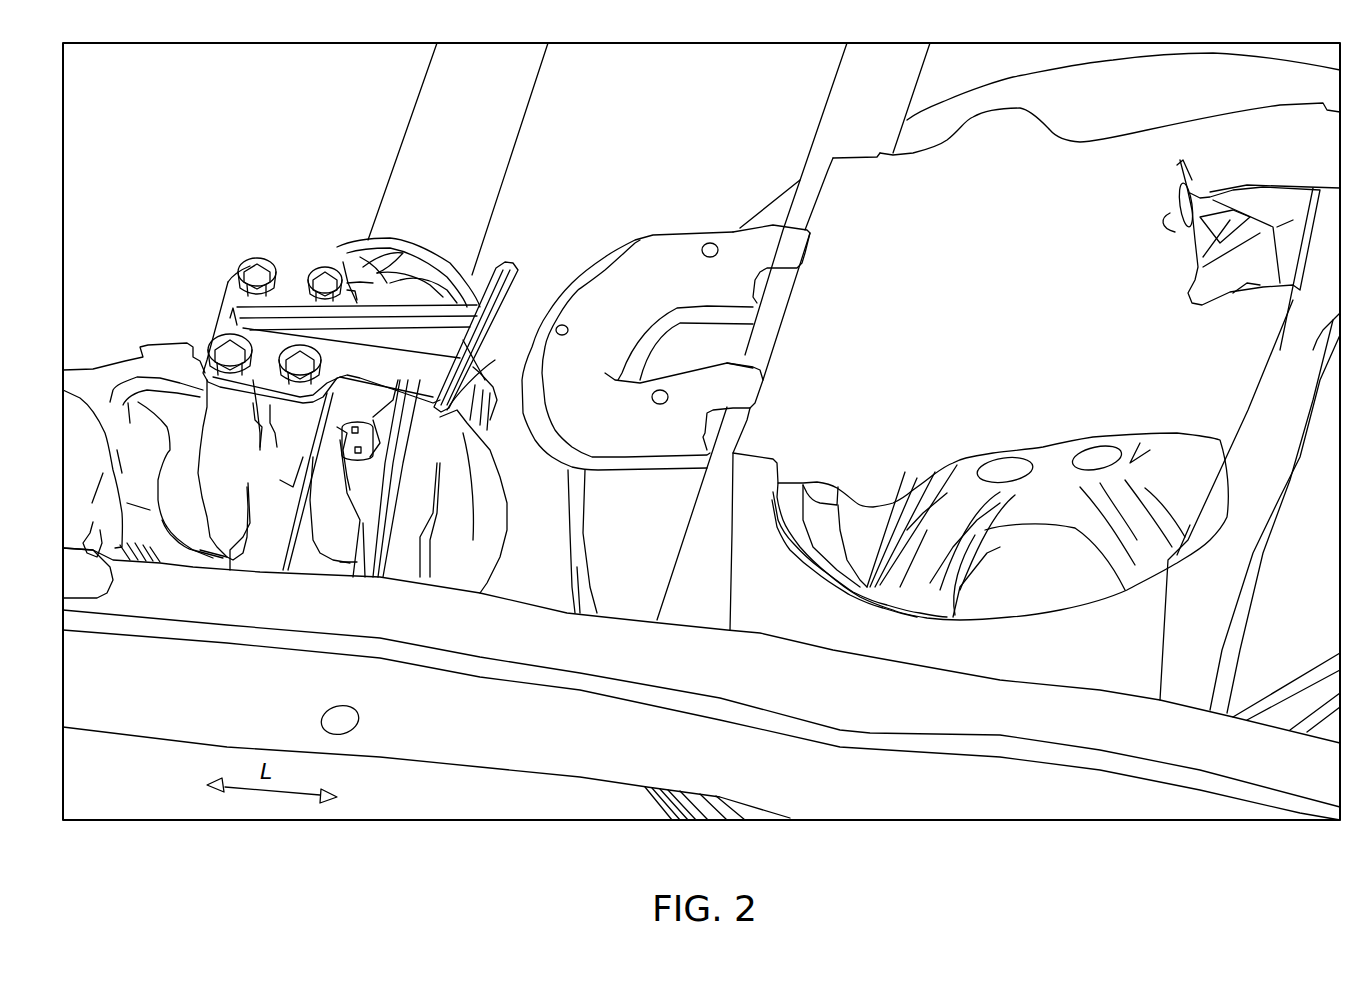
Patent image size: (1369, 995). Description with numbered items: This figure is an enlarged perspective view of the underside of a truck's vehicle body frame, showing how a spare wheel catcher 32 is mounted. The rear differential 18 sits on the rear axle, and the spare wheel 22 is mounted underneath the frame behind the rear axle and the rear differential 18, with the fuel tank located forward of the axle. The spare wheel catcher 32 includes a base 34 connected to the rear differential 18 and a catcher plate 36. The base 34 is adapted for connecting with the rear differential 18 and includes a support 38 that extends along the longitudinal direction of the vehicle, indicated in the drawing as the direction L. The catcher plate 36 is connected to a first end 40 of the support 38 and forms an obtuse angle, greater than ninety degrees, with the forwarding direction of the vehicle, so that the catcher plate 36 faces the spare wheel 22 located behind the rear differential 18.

The rear differential 18 is at (437, 467).
The spare wheel 22 is at (1133, 78).
The spare wheel catcher 32 is at (212, 305).
The base 34 is at (281, 283).
The catcher plate 36 is at (505, 265).
The support 38 is at (325, 318).
The first end 40 is at (462, 348).